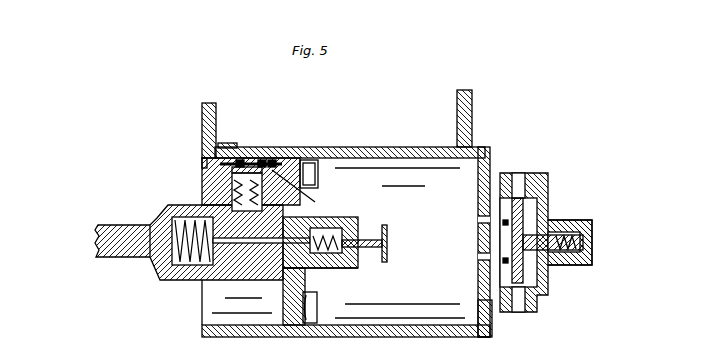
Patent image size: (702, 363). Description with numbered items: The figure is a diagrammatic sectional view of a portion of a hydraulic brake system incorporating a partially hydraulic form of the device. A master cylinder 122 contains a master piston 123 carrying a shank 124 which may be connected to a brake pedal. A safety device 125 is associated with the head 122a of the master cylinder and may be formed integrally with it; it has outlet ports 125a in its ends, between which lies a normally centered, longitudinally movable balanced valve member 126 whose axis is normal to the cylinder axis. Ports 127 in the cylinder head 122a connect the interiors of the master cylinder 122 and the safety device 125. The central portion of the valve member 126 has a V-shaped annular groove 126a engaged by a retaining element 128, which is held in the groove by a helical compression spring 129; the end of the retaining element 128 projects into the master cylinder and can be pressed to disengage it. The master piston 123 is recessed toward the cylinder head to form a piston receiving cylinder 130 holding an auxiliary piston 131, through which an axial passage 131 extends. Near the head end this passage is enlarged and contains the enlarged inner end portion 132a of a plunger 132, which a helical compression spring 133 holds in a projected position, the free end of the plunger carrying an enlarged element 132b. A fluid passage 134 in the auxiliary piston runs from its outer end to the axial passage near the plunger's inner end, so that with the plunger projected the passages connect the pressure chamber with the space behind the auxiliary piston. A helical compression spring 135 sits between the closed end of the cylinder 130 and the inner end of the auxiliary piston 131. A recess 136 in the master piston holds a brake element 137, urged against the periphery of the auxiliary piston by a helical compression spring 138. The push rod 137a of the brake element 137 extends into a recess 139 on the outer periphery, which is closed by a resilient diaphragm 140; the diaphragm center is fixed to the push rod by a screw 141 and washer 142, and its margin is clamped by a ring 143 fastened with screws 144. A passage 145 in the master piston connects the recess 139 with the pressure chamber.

The master cylinder 122 is at (395, 338).
The head 122a is at (492, 315).
The master piston 123 is at (300, 300).
The shank 124 is at (120, 258).
The safety device 125 is at (548, 192).
The outlet ports 125a is at (518, 180).
The balanced valve member 126 is at (522, 215).
The V-shaped annular groove 126a is at (503, 258).
The ports 127 is at (483, 221).
The retaining element 128 is at (553, 230).
The helical compression spring 129 is at (565, 252).
The piston receiving cylinder 130 is at (200, 262).
The auxiliary piston 131 is at (273, 244).
The plunger 132 is at (368, 248).
The enlarged inner end portion 132a is at (355, 225).
The enlarged element 132b is at (388, 233).
The helical compression spring 133 is at (322, 255).
The fluid passage 134 is at (358, 270).
The helical compression spring 135 is at (162, 213).
The recess 136 is at (215, 190).
The brake element 137 is at (232, 197).
The push rod 137a is at (222, 168).
The helical compression spring 138 is at (232, 172).
The recess 139 is at (268, 160).
The diaphragm 140 is at (242, 162).
The screw 141 is at (262, 162).
The washer 142 is at (272, 162).
The ring 143 is at (204, 165).
The screws 144 is at (230, 147).
The passage 145 is at (318, 203).